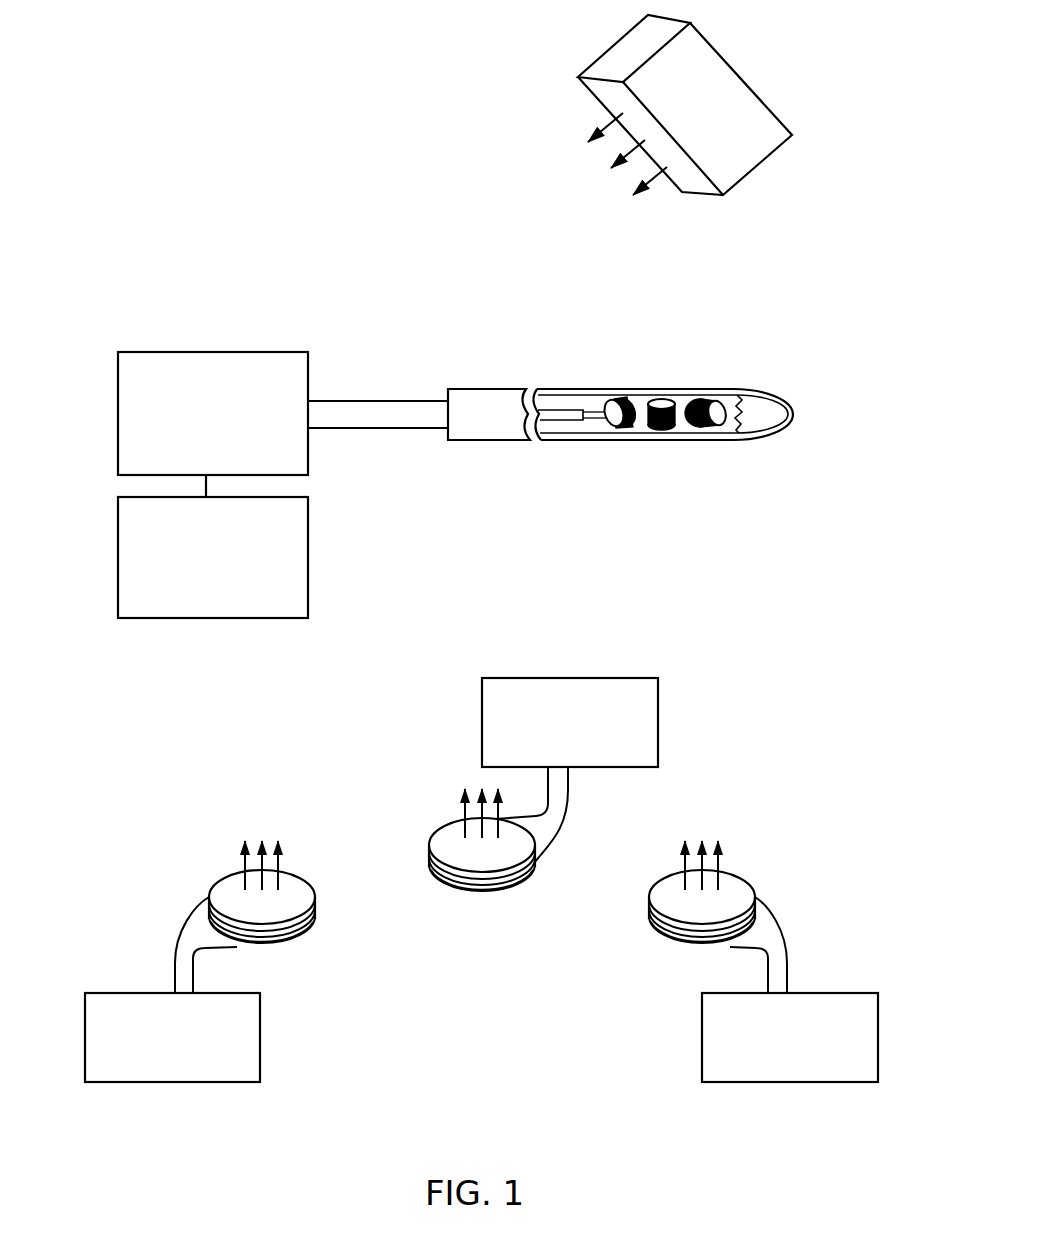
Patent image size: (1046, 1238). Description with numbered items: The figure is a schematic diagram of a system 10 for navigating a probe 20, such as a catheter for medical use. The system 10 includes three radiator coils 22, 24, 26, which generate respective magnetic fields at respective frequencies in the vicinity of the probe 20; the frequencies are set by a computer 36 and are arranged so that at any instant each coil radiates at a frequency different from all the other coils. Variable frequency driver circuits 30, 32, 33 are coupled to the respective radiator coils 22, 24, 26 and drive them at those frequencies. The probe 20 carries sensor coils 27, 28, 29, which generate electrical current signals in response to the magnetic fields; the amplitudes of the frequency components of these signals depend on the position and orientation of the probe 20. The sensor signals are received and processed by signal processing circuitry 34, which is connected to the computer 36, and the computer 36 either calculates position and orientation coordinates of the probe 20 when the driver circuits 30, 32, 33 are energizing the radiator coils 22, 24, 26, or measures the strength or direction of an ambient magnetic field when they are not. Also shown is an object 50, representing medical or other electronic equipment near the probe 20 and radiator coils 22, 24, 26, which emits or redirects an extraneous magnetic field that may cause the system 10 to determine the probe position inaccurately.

The system 10 is at (120, 745).
The probe 20 is at (780, 432).
The radiator coil 22 is at (688, 947).
The radiator coil 24 is at (310, 930).
The radiator coil 26 is at (508, 893).
The sensor coil 27 is at (630, 424).
The sensor coil 28 is at (671, 426).
The sensor coil 29 is at (718, 426).
The variable frequency driver circuit 30 is at (702, 1062).
The variable frequency driver circuit 32 is at (260, 1060).
The variable frequency driver circuit 33 is at (658, 731).
The signal processing circuitry 34 is at (308, 465).
The computer 36 is at (308, 565).
The object 50 is at (718, 127).